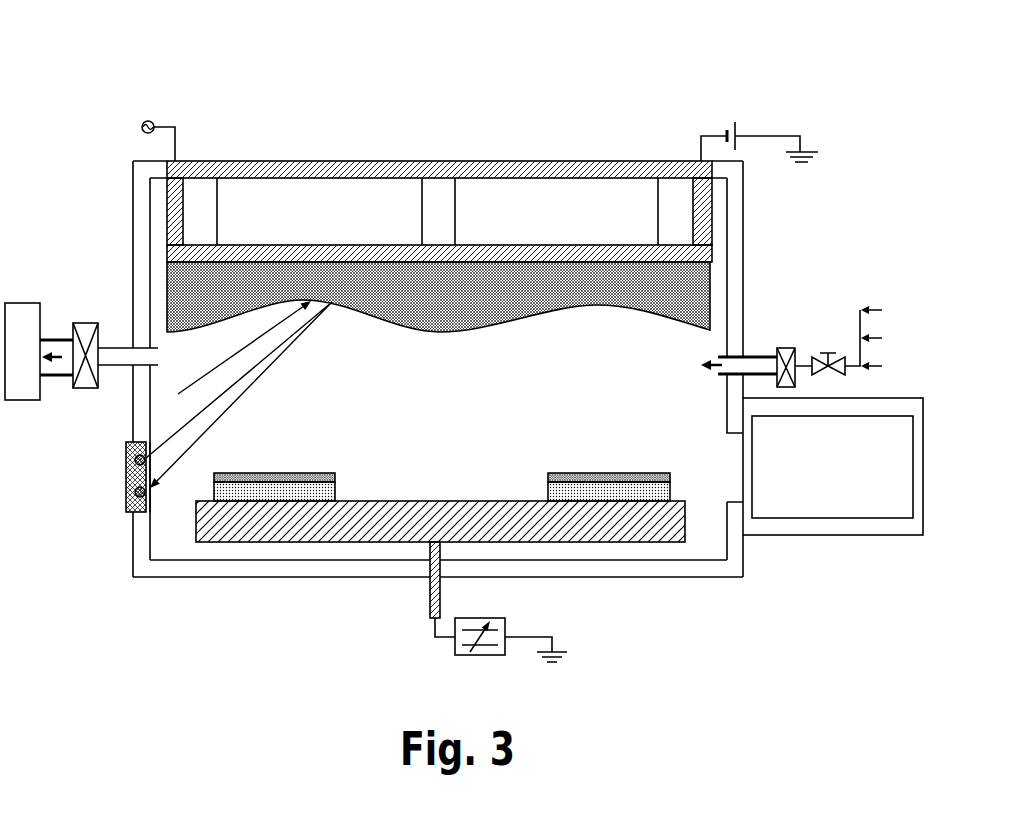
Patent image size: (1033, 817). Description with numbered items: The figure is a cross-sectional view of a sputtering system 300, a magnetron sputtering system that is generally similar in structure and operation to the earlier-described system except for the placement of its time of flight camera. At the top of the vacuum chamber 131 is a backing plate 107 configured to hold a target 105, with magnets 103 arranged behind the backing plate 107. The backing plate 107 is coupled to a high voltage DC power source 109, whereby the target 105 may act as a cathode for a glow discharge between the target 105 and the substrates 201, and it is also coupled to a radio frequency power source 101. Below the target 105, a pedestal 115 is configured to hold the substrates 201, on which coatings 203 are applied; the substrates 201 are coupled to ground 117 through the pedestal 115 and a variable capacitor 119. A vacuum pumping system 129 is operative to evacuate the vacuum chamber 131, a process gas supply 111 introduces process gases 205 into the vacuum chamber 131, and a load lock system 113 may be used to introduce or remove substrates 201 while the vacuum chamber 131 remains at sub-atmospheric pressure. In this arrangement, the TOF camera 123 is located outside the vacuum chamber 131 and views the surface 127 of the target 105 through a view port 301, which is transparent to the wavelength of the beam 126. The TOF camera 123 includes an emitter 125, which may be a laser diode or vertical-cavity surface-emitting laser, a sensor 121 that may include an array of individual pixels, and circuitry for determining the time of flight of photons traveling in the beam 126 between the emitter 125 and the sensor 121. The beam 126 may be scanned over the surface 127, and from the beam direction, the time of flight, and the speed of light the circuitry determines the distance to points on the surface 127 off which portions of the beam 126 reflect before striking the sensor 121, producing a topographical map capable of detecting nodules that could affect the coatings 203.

The sputtering system 300 is at (125, 58).
The radio frequency (RF) power source 101 is at (152, 122).
The magnets 103 is at (210, 212).
The target 105 is at (298, 283).
The backing plate 107 is at (497, 253).
The high voltage DC power source 109 is at (737, 127).
The process gas supply 111 is at (868, 264).
The load lock system 113 is at (810, 525).
The pedestal 115 is at (678, 518).
The ground 117 is at (560, 652).
The variable capacitor 119 is at (492, 624).
The sensor 121 is at (147, 496).
The time of flight (TOF) camera 123 is at (131, 478).
The emitter 125 is at (138, 462).
The beam 126 is at (227, 412).
The surface of target 127 is at (178, 394).
The vacuum pumping system 129 is at (27, 328).
The vacuum chamber 131 is at (137, 213).
The substrates 201 is at (617, 490).
The coatings 203 is at (653, 480).
The process gases 205 is at (719, 357).
The view port 301 is at (149, 500).